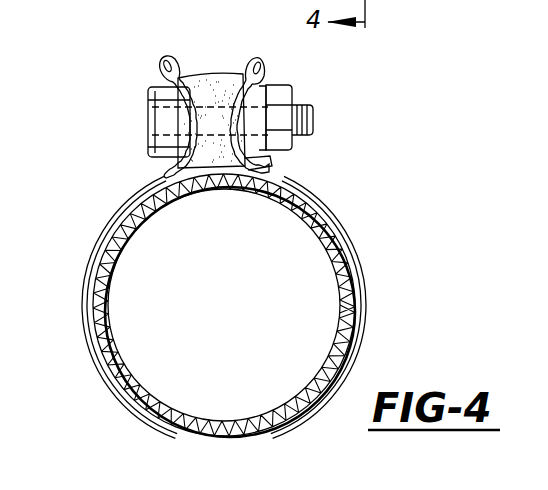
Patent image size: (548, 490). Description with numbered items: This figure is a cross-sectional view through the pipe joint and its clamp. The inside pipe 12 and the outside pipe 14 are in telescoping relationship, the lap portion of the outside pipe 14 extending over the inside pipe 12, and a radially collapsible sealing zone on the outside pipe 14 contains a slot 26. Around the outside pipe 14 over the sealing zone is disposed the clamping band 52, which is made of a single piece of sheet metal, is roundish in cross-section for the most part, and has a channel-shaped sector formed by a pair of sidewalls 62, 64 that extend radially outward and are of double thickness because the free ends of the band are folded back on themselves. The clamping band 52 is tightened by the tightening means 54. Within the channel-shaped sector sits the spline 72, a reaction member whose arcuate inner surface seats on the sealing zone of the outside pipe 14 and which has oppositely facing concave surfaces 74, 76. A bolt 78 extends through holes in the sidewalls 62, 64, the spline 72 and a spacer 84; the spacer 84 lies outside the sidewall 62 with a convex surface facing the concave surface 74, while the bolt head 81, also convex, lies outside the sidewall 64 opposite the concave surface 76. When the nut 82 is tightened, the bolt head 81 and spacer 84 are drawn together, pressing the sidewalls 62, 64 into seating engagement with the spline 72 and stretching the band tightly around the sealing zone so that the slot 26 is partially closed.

The inside pipe 12 is at (203, 420).
The outside pipe 14 is at (118, 215).
The slot 26 is at (110, 281).
The clamping band 52 is at (368, 236).
The tightening means 54 is at (282, 59).
The sidewall 62 is at (272, 147).
The sidewall 64 is at (192, 125).
The spline 72 is at (207, 78).
The concave surface 74 is at (237, 80).
The concave surface 76 is at (182, 110).
The bolt 78 is at (314, 106).
The bolt head 81 is at (162, 87).
The nut 82 is at (281, 153).
The spacer 84 is at (253, 84).